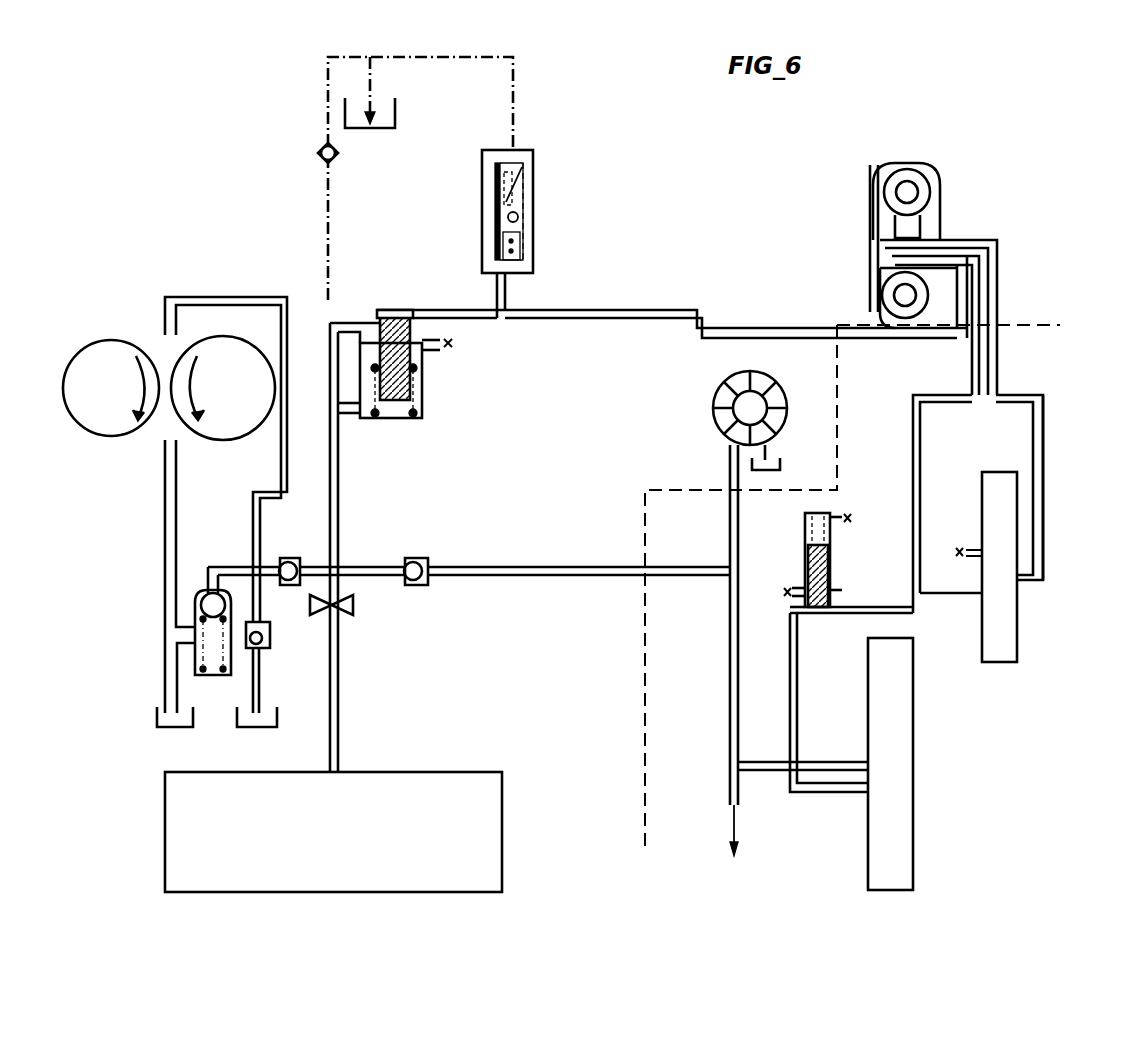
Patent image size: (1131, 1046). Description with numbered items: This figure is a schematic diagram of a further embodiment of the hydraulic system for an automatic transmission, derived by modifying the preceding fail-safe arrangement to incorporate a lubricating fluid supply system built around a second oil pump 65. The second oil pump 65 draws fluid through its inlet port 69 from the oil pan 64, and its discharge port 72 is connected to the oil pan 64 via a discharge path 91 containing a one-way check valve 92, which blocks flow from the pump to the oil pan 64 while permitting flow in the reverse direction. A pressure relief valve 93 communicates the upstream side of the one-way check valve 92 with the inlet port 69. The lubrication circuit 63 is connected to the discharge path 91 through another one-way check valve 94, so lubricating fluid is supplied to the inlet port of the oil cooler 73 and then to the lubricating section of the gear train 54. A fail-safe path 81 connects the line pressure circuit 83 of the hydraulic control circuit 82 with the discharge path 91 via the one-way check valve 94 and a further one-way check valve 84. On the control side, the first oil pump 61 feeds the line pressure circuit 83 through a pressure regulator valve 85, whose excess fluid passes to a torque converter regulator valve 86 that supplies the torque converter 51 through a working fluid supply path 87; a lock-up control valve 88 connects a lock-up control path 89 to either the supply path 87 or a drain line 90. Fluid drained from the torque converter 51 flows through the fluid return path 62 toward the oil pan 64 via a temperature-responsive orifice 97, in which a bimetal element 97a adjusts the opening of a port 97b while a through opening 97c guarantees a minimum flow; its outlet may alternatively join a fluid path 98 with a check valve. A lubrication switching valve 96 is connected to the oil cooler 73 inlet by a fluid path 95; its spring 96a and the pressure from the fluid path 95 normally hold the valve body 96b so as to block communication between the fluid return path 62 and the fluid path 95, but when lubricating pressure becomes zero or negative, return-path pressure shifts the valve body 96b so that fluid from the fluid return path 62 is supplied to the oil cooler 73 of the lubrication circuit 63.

The torque converter 51 is at (930, 185).
The gear train 54 is at (333, 832).
The first oil pump 61 is at (715, 404).
The fluid return path 62 is at (893, 340).
The lubrication circuit 63 is at (340, 668).
The oil pan 64 is at (236, 731).
The second oil pump 65 is at (100, 342).
The inlet port 69 is at (170, 445).
The discharge port 72 is at (170, 305).
The oil cooler 73 is at (355, 605).
The fail-safe path 81 is at (572, 577).
The hydraulic control circuit 82 is at (1046, 324).
The line pressure circuit 83 is at (730, 676).
The one-way check valve 84 is at (416, 560).
The pressure regulator valve 85 is at (914, 742).
The torque converter regulator valve 86 is at (817, 610).
The working fluid supply path 87 is at (921, 452).
The lock-up control valve 88 is at (1017, 640).
The lock-up control path 89 is at (1045, 452).
The drain line 90 is at (966, 550).
The discharge path 91 is at (253, 497).
The one-way check valve 92 is at (263, 641).
The pressure relief valve 93 is at (206, 598).
The one-way check valve 94 is at (290, 560).
The fluid path 95 is at (340, 466).
The lubrication switching valve 96 is at (648, 384).
The spring 96a is at (422, 395).
The valve body 96b is at (420, 360).
The temperature-responsive orifice 97 is at (527, 213).
The bimetal element 97a is at (506, 200).
The port 97b is at (523, 178).
The through opening 97c is at (518, 220).
The fluid path 98 is at (327, 195).